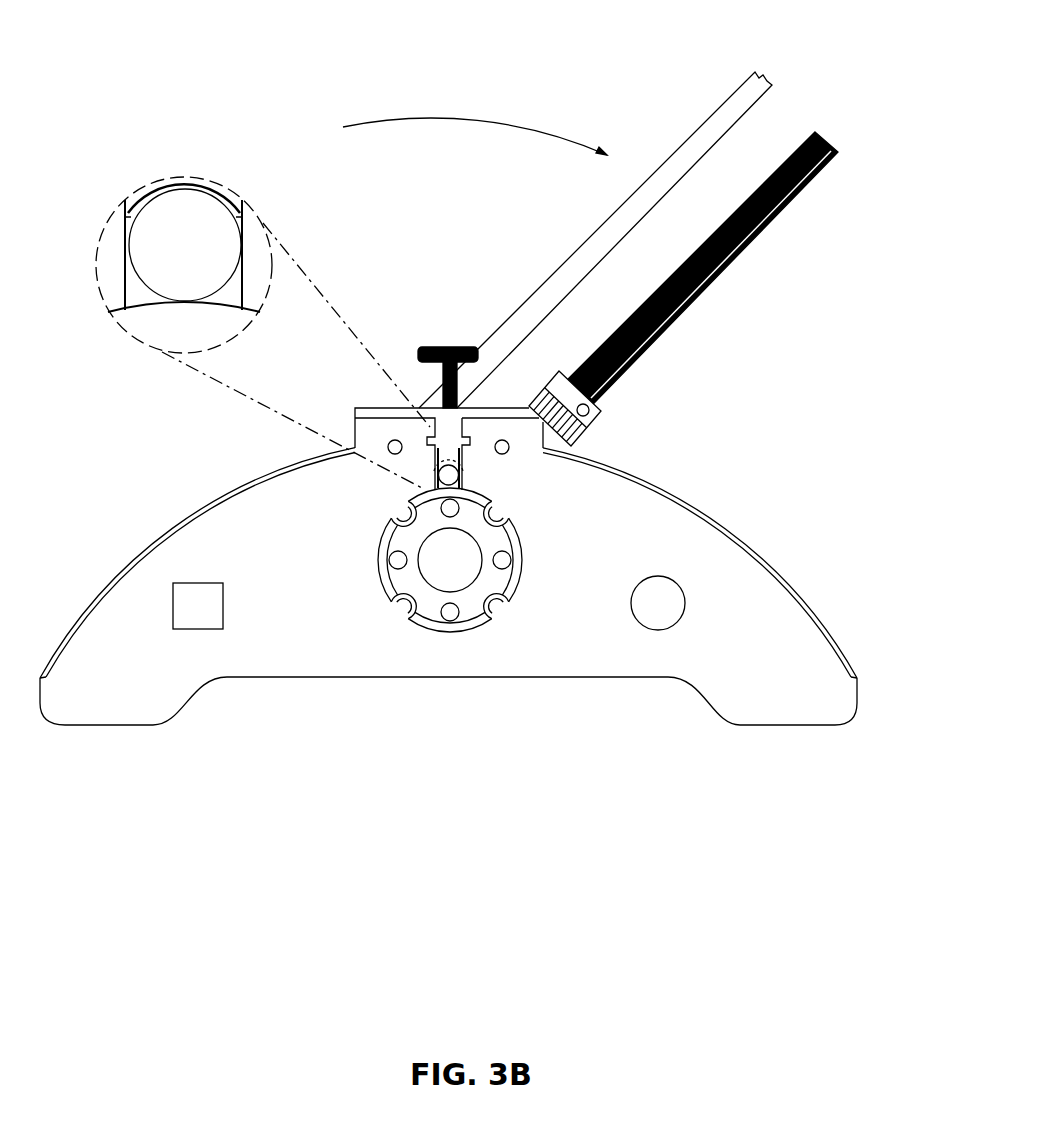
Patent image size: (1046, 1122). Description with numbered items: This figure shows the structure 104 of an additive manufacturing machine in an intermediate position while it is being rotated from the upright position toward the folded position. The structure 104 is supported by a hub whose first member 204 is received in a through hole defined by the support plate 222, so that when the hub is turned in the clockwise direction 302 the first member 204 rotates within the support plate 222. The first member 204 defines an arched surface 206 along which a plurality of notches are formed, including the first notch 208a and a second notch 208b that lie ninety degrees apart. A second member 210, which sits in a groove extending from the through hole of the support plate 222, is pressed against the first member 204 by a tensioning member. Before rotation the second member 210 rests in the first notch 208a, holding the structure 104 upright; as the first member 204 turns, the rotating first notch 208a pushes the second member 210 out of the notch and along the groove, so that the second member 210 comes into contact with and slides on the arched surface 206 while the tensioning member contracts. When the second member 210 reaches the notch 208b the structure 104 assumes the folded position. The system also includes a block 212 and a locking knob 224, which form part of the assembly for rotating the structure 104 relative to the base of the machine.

The structure 104 is at (712, 72).
The first member 204 is at (437, 585).
The arched surface 206 is at (237, 310).
The first notch 208a is at (502, 513).
The notch 208b is at (398, 516).
The second member 210 is at (165, 273).
The block 212 is at (140, 200).
The support plate 222 is at (595, 677).
The locking knob 224 is at (458, 347).
The clockwise direction 302 is at (482, 118).